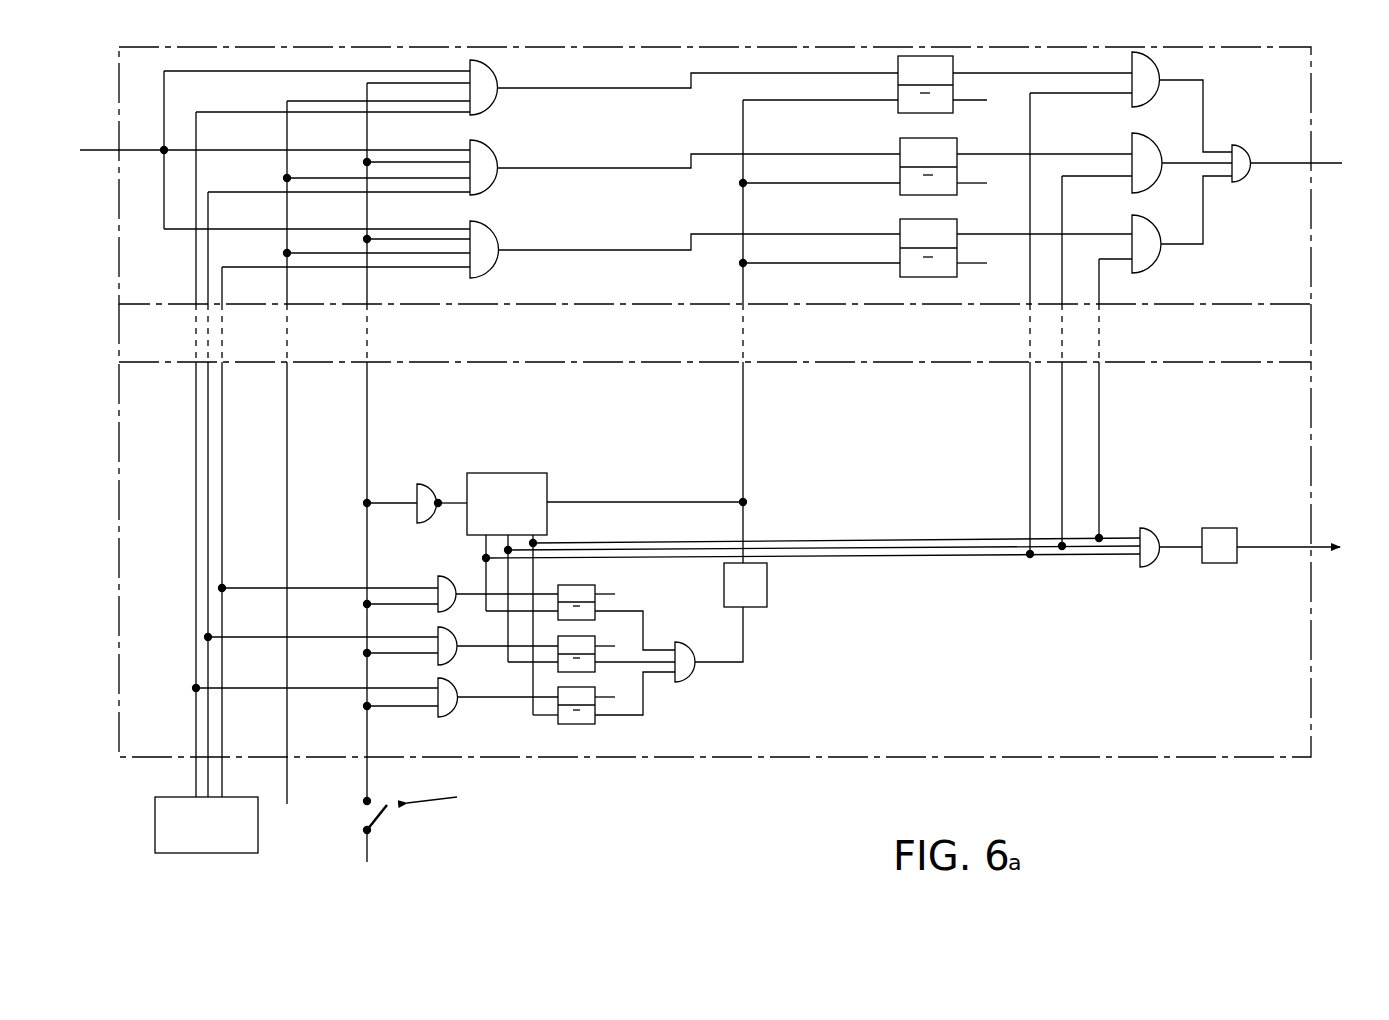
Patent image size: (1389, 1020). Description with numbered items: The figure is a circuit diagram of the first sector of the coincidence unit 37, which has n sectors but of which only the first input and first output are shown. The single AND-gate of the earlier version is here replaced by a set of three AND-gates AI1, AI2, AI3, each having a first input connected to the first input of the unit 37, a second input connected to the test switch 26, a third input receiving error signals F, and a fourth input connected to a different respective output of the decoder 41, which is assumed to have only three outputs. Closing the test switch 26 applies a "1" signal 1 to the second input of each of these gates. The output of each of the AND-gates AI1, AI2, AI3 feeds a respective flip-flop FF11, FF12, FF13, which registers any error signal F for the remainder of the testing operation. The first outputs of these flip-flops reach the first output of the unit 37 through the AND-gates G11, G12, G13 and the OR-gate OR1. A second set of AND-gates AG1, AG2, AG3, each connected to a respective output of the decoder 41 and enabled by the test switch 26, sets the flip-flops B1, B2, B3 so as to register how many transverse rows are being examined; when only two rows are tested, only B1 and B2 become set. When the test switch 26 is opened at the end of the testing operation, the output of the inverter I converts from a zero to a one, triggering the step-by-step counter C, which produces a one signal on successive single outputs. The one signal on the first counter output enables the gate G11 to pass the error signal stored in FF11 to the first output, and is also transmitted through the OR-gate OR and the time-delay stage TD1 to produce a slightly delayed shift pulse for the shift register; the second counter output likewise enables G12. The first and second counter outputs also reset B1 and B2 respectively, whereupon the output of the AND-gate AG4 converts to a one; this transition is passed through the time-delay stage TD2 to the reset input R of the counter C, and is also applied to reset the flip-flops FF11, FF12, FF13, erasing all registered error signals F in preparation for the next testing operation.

The "1" signal 1 is at (721, 162).
The test switch 26 is at (384, 816).
The coincidence unit 37 is at (1138, 757).
The decoder 41 is at (207, 853).
The AND-gate AI1 is at (503, 73).
The AND-gate AI2 is at (503, 152).
The AND-gate AI3 is at (503, 232).
The flip-flop FF11 is at (898, 62).
The flip-flop FF12 is at (900, 137).
The flip-flop FF13 is at (900, 217).
The AND-gate G11 is at (1158, 58).
The AND-gate G12 is at (1142, 138).
The AND-gate G13 is at (1150, 222).
The OR-gate OR1 is at (1260, 133).
The inverter I is at (430, 483).
The step-by-step counter C is at (803, 566).
The reset input R is at (647, 496).
The AND-gate AG1 is at (456, 568).
The AND-gate AG2 is at (448, 630).
The AND-gate AG3 is at (452, 708).
The AND-gate AG4 is at (690, 678).
The flip-flop B1 is at (588, 620).
The flip-flop B2 is at (588, 672).
The flip-flop B3 is at (588, 724).
The time-delay stage TD1 is at (1222, 563).
The time-delay stage TD2 is at (767, 588).
The OR-gate OR is at (1166, 516).
The error signals F is at (293, 812).